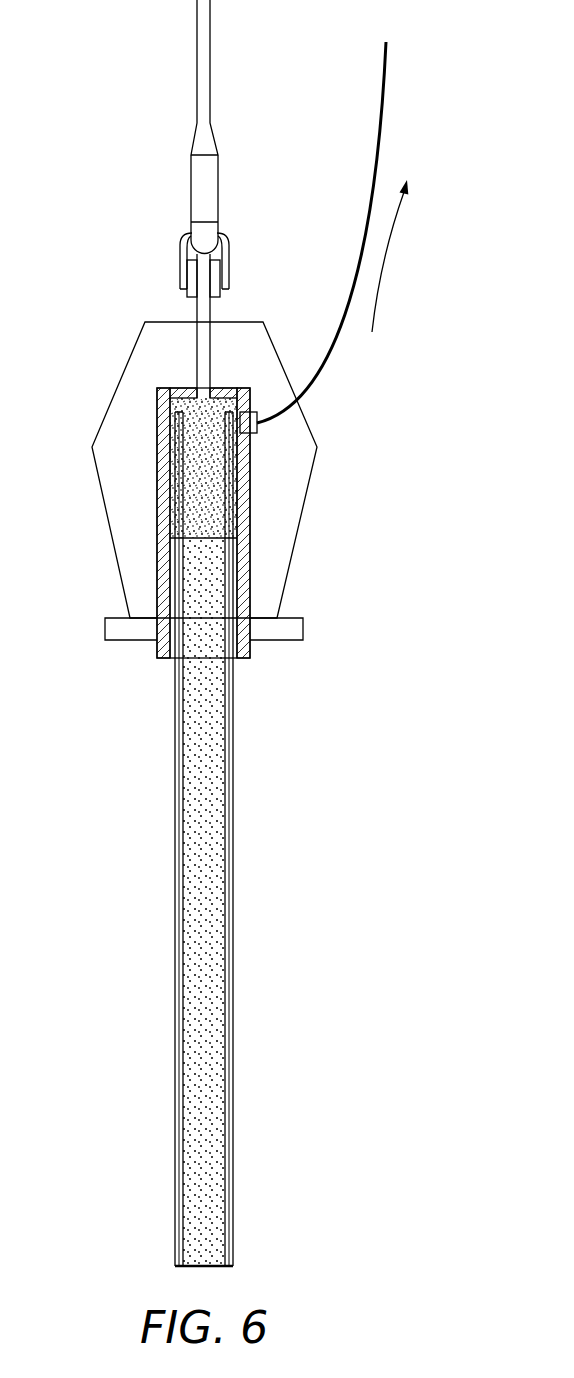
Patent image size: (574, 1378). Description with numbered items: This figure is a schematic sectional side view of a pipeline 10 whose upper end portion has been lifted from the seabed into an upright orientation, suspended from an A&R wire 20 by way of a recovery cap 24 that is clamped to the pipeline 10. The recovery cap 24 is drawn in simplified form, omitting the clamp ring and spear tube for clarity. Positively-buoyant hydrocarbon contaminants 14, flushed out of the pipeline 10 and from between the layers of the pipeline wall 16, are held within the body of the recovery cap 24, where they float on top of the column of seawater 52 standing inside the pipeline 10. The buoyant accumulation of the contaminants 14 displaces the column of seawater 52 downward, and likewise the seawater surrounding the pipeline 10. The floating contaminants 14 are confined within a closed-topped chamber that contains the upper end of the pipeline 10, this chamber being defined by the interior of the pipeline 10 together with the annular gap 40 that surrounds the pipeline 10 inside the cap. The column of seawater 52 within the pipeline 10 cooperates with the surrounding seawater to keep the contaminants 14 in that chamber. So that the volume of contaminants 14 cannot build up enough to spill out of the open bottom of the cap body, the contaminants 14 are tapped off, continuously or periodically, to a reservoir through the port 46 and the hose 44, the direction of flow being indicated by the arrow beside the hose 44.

The pipeline 10 is at (193, 839).
The hydrocarbon contaminants 14 is at (198, 462).
The pipeline wall 16 is at (233, 1068).
The A&R wire 20 is at (197, 38).
The recovery cap 24 is at (108, 301).
The annular gap 40 is at (236, 500).
The hose 44 is at (388, 100).
The port 46 is at (258, 428).
The column of seawater 52 is at (210, 747).